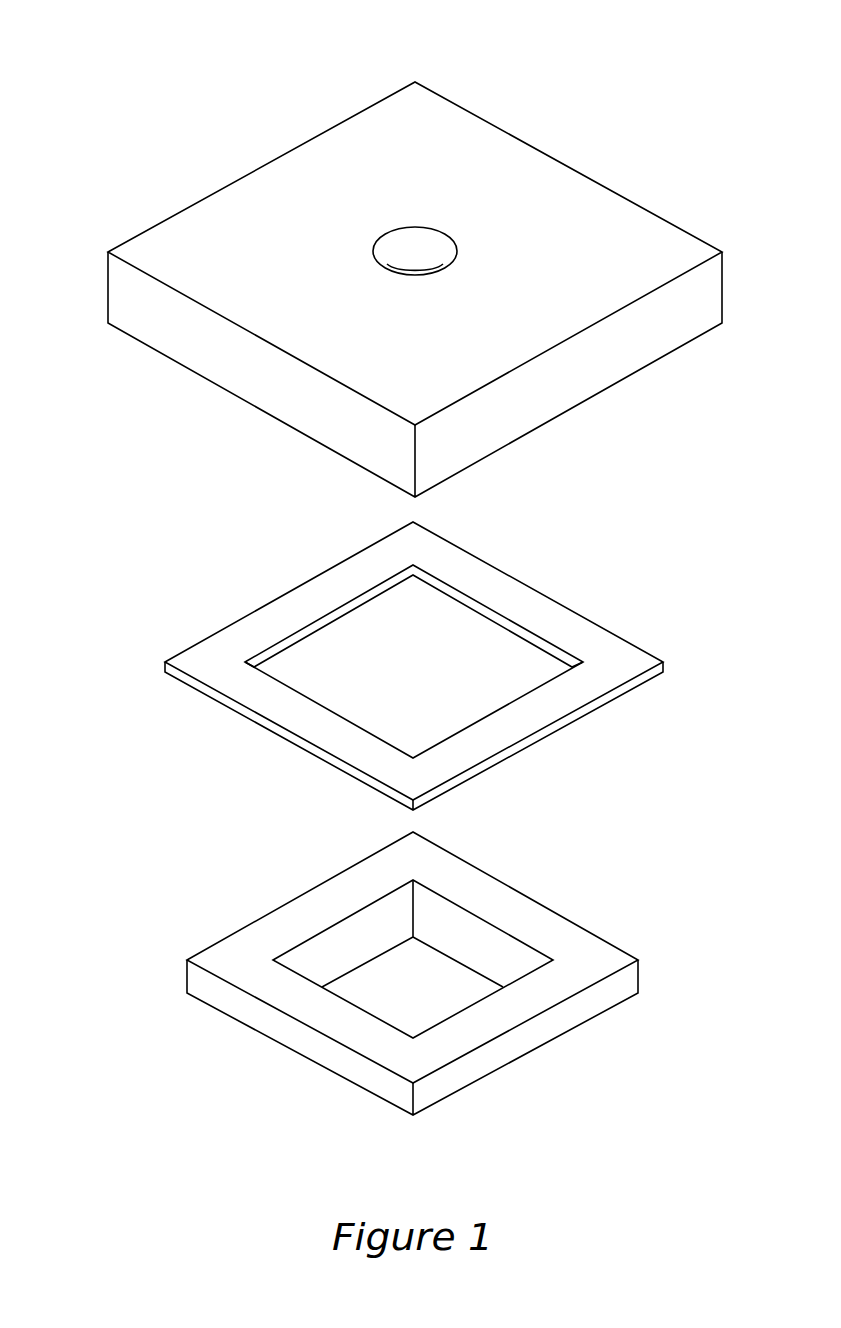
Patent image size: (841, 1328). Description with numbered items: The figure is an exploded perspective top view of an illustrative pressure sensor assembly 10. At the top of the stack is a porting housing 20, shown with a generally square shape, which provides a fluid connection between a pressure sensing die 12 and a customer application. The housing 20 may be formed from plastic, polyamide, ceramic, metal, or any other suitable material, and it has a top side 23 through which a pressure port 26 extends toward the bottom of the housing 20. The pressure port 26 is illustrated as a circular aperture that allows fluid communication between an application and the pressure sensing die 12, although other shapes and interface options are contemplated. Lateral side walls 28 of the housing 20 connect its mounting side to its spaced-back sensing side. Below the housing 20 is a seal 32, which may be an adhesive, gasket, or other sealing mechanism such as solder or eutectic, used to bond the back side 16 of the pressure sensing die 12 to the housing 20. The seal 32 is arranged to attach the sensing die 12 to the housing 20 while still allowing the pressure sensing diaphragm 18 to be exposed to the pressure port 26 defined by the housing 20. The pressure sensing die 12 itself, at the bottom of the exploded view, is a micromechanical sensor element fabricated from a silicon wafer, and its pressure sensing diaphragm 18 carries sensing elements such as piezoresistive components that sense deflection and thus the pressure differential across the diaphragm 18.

The pressure sensor assembly 10 is at (106, 61).
The pressure sensing die 12 is at (608, 922).
The back side 16 is at (578, 975).
The pressure sensing diaphragm 18 is at (380, 978).
The porting housing 20 is at (635, 195).
The top side 23 is at (272, 178).
The pressure port 26 is at (425, 242).
The lateral side walls 28 is at (247, 373).
The seal 32 is at (590, 647).